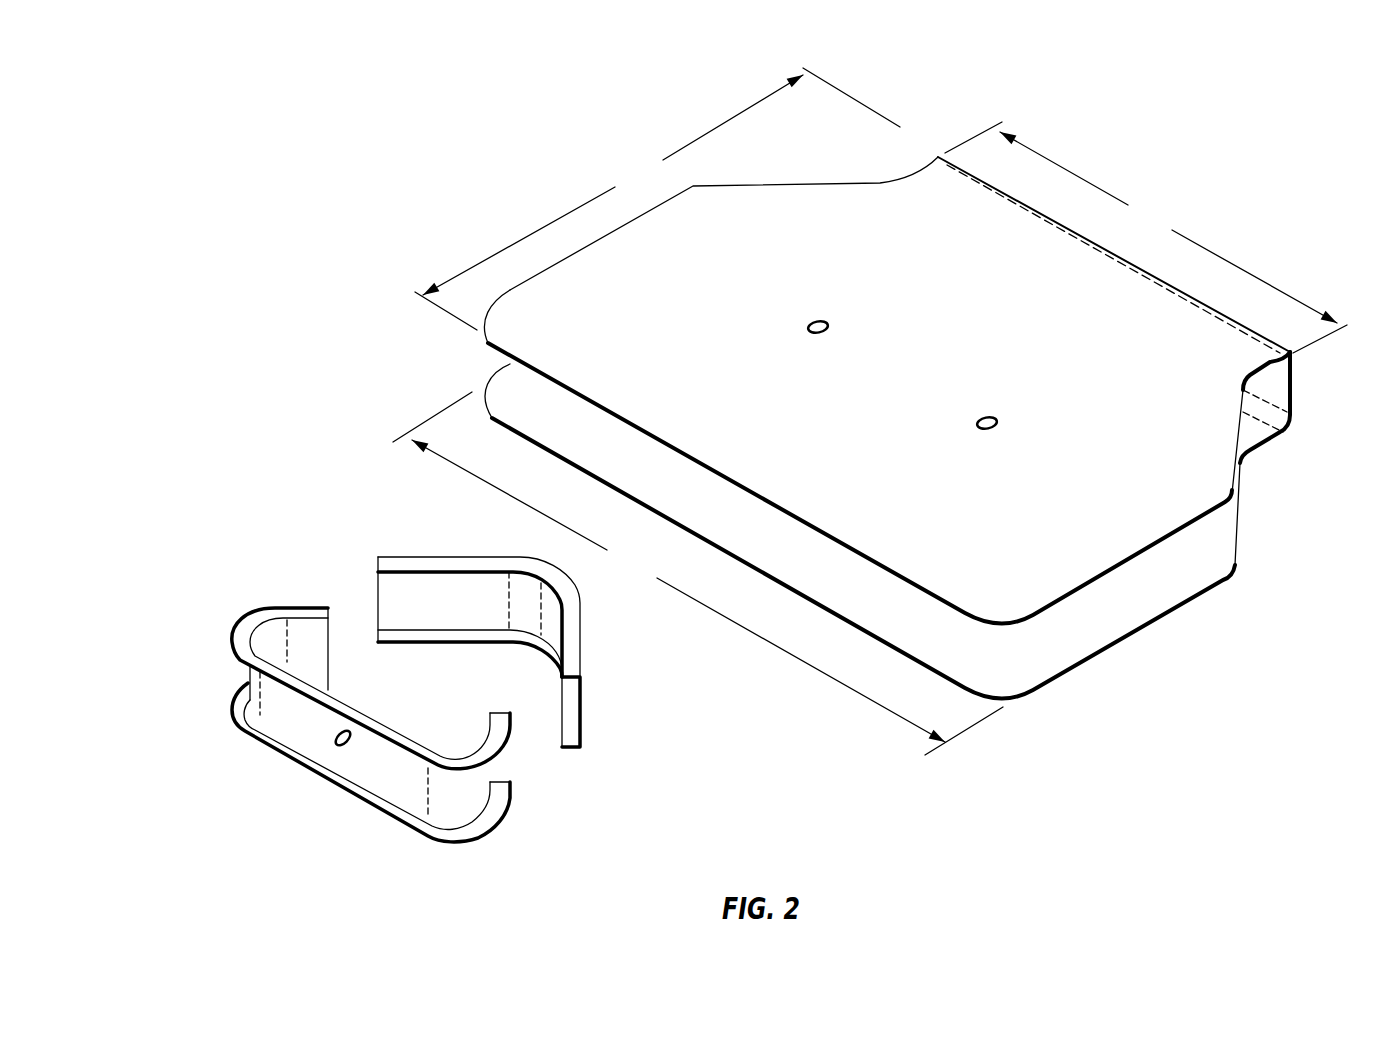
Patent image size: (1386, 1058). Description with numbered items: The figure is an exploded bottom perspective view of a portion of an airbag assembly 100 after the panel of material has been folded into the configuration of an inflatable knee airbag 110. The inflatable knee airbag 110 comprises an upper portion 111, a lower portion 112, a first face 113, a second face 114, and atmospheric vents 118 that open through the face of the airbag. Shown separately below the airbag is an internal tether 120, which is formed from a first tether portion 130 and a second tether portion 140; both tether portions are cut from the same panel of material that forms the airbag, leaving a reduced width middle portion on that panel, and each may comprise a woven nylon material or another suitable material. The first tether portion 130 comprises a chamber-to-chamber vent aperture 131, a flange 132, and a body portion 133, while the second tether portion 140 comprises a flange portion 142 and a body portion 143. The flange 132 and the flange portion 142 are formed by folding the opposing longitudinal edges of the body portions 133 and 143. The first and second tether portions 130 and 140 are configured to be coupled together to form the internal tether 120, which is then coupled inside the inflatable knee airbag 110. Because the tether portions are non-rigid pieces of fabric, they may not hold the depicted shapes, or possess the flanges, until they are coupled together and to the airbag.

The airbag assembly 100 is at (618, 133).
The inflatable knee airbag 110 is at (1183, 180).
The upper portion 111 is at (535, 388).
The lower portion 112 is at (1158, 304).
The first face 113 is at (822, 565).
The second face 114 is at (904, 427).
The atmospheric vents 118 is at (830, 323).
The internal tether 120 is at (423, 491).
The first tether portion 130 is at (213, 665).
The chamber-to-chamber vent aperture 131 is at (337, 742).
The flange 132 is at (410, 745).
The body portion 133 is at (450, 795).
The second tether portion 140 is at (645, 690).
The flange portion 142 is at (573, 730).
The body portion 143 is at (417, 590).